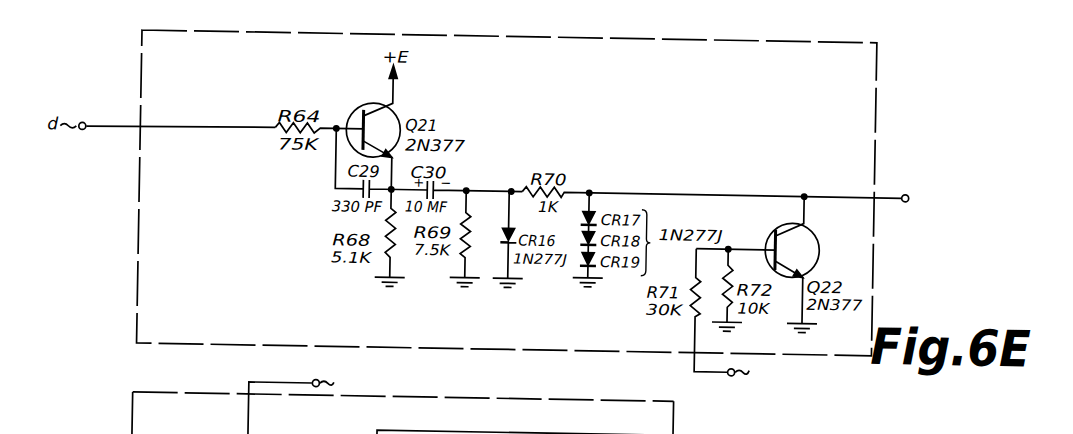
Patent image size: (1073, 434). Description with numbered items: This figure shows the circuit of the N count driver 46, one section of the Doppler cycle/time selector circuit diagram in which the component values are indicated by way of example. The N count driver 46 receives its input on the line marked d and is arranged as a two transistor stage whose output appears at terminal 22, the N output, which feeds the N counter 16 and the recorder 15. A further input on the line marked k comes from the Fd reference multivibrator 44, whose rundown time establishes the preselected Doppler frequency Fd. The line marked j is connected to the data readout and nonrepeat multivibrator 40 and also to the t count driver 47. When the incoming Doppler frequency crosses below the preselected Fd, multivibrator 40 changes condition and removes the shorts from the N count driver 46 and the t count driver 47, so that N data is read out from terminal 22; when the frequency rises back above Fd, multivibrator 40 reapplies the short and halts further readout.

The terminal 22 is at (907, 181).
The N count driver 46 is at (481, 344).
The Fd reference multivibrator 44 is at (281, 392).
The data readout and nonrepeat multivibrator 40 is at (817, 333).
The t count driver 47 is at (816, 407).
The N counter 16 is at (960, 236).
The recorder 15 is at (960, 257).